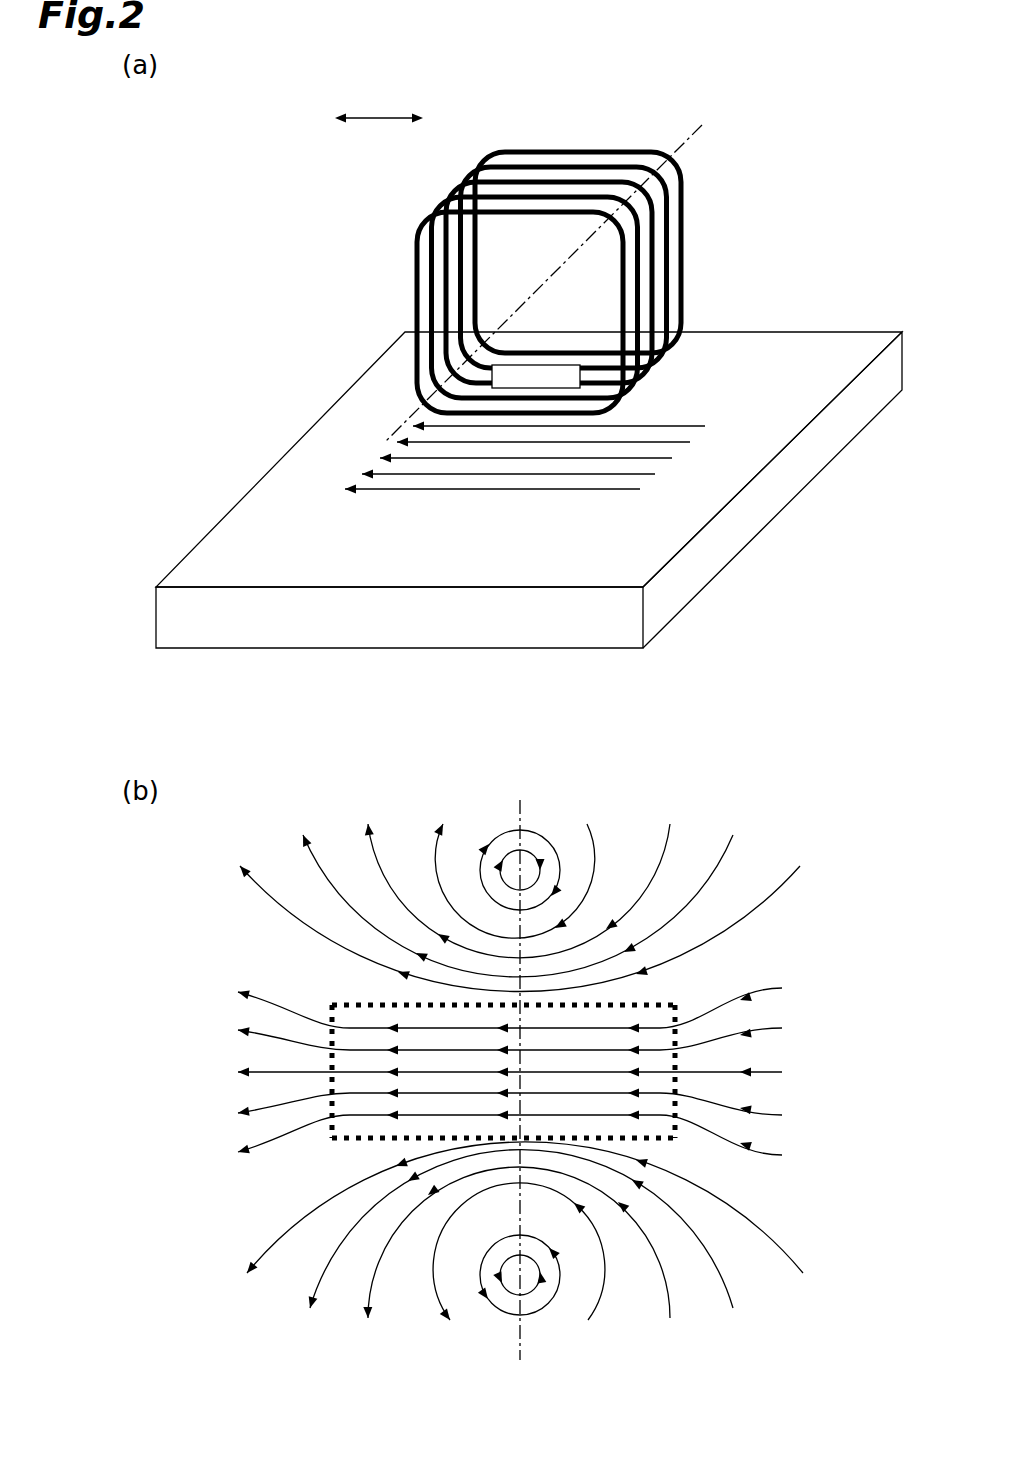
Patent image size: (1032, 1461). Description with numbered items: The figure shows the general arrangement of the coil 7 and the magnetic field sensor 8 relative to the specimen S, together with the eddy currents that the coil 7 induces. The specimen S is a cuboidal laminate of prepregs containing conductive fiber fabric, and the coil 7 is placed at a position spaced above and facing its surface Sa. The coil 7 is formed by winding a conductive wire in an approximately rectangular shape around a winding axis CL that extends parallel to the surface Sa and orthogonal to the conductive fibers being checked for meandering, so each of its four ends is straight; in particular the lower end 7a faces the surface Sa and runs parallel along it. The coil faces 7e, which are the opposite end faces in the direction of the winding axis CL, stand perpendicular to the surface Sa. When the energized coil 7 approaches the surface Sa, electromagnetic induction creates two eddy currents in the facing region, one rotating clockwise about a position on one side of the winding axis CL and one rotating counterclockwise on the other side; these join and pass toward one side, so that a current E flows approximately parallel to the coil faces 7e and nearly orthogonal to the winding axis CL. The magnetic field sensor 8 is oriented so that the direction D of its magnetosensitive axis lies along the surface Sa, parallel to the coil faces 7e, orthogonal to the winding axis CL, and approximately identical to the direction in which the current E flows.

The coil 7 is at (746, 140).
The coil faces 7e is at (586, 138).
The end of the coil 7a is at (600, 419).
The magnetic field sensor 8 is at (568, 364).
The specimen S is at (290, 390).
The surface of the specimen Sa is at (780, 402).
The winding axis CL is at (517, 307).
The direction of the magnetosensitive axis D is at (380, 117).
The current E is at (565, 490).